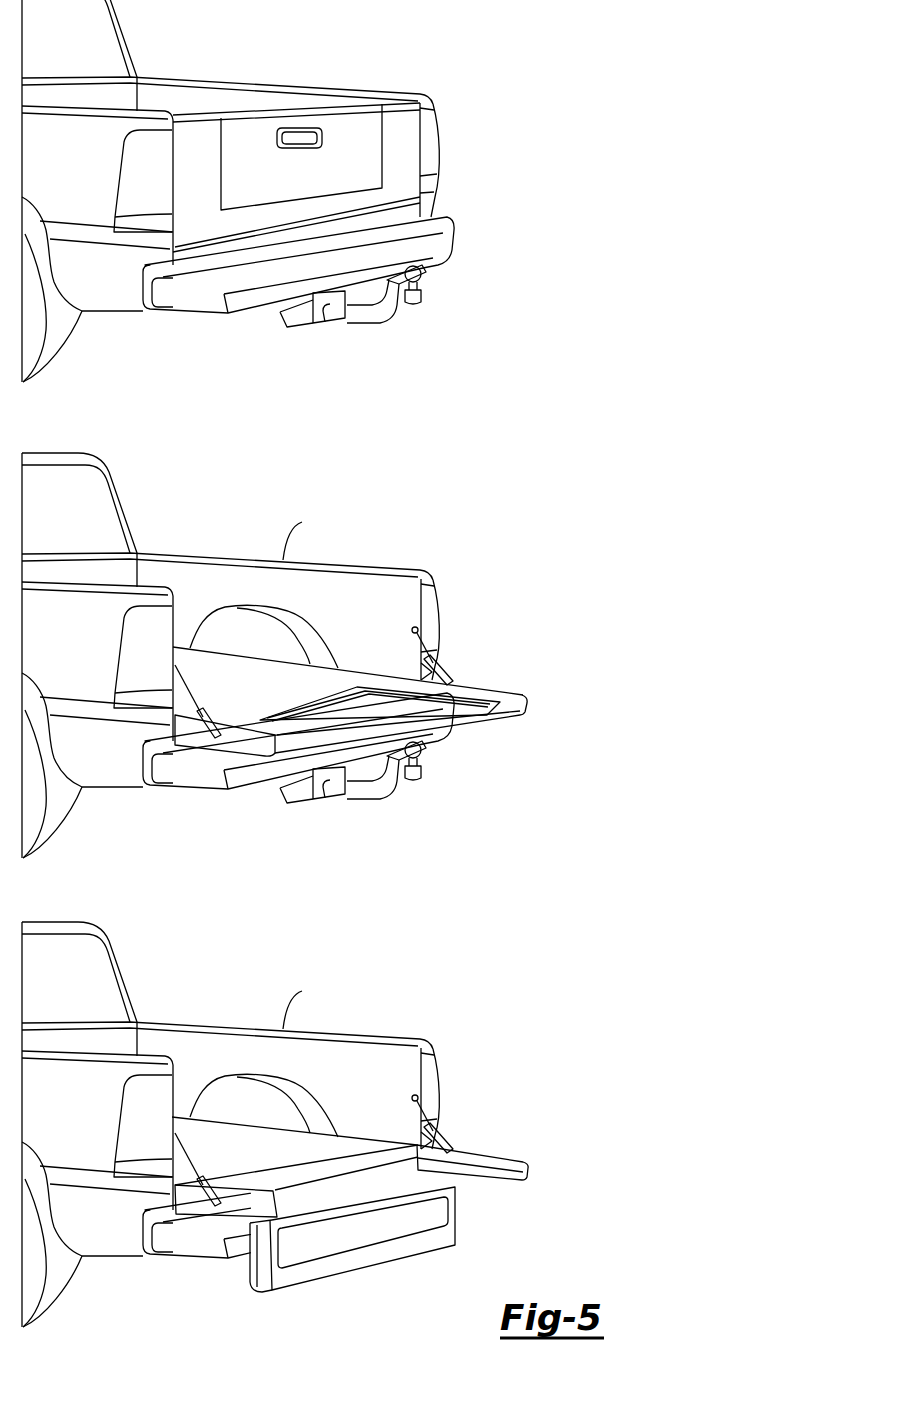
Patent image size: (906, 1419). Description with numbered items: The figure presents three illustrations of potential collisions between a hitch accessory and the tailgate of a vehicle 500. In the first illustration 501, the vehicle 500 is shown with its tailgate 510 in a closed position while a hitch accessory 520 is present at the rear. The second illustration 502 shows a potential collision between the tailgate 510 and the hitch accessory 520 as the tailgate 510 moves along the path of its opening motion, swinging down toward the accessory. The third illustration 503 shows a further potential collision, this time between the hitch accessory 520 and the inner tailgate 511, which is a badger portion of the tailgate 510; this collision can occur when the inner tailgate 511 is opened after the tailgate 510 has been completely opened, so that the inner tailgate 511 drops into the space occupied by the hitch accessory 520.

The vehicle 500 is at (212, 78).
The illustration 501 is at (463, 115).
The illustration 502 is at (480, 645).
The illustration 503 is at (500, 1100).
The tailgate 510 is at (402, 160).
The inner tailgate 511 is at (301, 104).
The hitch accessory 520 is at (367, 321).